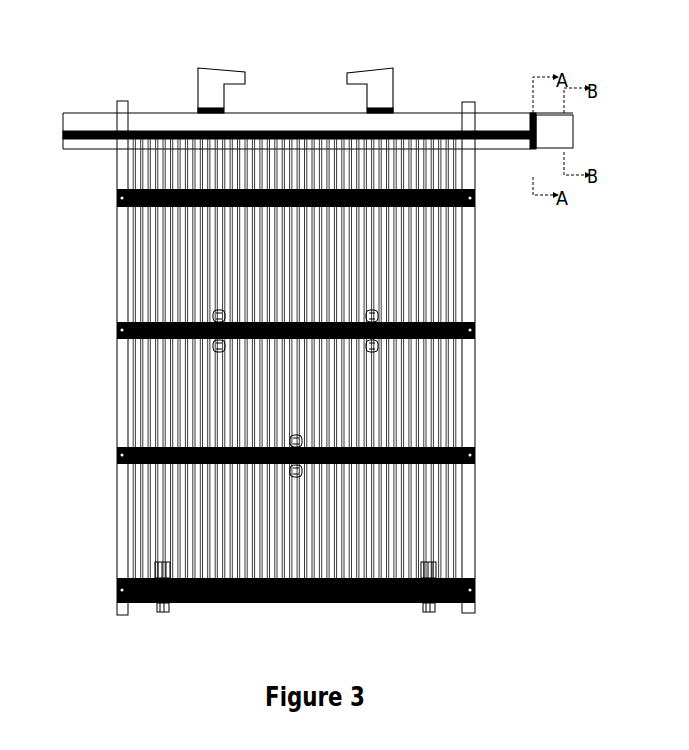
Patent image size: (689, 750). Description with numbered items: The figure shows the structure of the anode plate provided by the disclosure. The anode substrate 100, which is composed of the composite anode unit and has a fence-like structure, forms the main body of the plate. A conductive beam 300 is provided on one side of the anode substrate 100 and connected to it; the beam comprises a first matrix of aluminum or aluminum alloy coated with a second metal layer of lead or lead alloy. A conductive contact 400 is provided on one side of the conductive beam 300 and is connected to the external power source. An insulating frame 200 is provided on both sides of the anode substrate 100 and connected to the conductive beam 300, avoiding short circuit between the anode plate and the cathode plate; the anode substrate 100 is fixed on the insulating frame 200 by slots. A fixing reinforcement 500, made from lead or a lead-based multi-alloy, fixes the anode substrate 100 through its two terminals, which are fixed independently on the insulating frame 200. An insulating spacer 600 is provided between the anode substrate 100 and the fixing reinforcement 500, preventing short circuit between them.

The anode substrate 100 is at (140, 402).
The insulating frame 200 is at (119, 101).
The conductive beam 300 is at (168, 112).
The conductive contact 400 is at (552, 125).
The fixing reinforcement 500 is at (476, 578).
The insulating spacer 600 is at (294, 436).